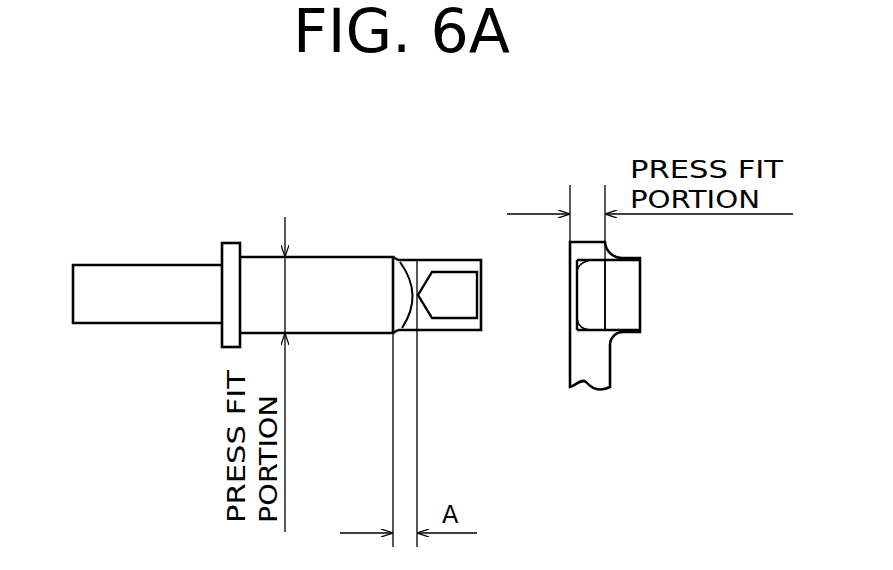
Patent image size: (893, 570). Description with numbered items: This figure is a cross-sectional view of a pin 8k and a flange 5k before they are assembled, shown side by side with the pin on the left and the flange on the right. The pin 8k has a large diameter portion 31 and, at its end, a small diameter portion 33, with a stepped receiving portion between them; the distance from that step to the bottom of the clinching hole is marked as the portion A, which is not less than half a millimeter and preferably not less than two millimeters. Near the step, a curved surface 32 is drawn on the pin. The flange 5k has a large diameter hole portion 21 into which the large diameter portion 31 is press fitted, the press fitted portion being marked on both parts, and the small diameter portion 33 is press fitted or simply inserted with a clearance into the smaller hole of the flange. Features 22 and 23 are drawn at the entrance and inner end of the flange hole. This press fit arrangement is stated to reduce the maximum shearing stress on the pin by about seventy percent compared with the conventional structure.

The pin 8k is at (157, 265).
The large diameter portion 31 is at (332, 257).
The curved surface 32 is at (401, 262).
The small diameter portion 33 is at (450, 331).
The flange 5k is at (611, 366).
The large diameter hole portion 21 is at (586, 270).
The chamfer 22 is at (572, 320).
The hole portion 23 is at (622, 326).